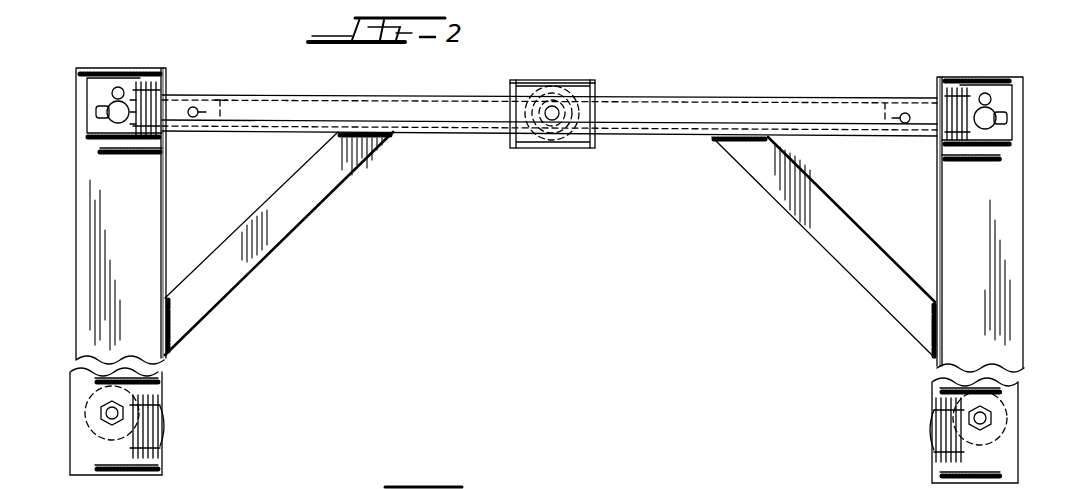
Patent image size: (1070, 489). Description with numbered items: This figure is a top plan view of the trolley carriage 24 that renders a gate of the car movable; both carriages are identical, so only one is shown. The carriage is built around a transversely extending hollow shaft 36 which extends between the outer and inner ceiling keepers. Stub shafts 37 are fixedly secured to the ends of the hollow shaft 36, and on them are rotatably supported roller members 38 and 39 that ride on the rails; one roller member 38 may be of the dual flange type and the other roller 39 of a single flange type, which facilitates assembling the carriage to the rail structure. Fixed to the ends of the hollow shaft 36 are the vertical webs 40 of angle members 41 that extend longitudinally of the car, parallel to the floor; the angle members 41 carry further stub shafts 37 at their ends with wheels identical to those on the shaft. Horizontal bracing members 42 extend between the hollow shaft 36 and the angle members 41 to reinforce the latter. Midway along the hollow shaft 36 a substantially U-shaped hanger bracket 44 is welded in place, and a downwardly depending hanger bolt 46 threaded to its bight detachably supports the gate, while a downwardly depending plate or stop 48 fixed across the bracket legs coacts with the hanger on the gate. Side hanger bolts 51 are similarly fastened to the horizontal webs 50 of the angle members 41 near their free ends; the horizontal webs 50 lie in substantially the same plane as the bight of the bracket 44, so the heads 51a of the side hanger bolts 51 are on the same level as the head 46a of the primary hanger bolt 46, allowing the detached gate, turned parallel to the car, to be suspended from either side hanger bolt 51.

The trolley carriage 24 is at (668, 95).
The hollow shaft 36 is at (790, 96).
The stub shaft 37 is at (138, 90).
The roller member 38 is at (150, 96).
The roller member 39 is at (978, 92).
The vertical web 40 is at (167, 193).
The angle member 41 is at (74, 202).
The horizontal bracing member 42 is at (328, 186).
The hanger bracket 44 is at (598, 140).
The hanger bolt 46 is at (553, 92).
The head of hanger bolt 46a is at (551, 150).
The stop plate 48 is at (576, 82).
The horizontal web 50 is at (86, 312).
The side hanger bolt 51 is at (106, 413).
The head of side hanger bolt 51a is at (84, 400).